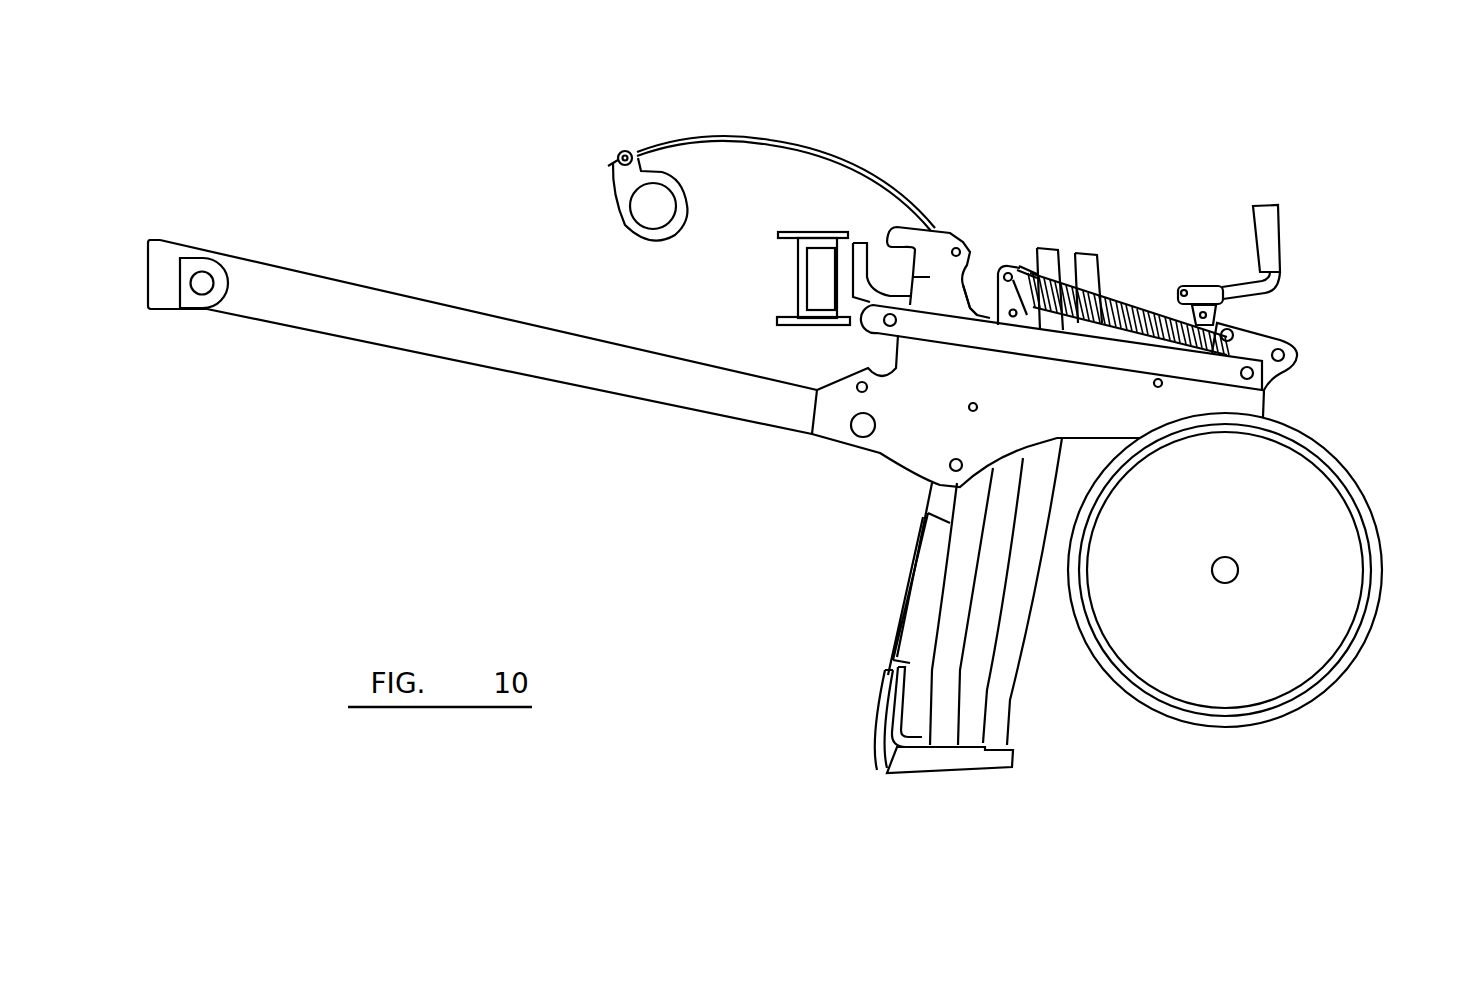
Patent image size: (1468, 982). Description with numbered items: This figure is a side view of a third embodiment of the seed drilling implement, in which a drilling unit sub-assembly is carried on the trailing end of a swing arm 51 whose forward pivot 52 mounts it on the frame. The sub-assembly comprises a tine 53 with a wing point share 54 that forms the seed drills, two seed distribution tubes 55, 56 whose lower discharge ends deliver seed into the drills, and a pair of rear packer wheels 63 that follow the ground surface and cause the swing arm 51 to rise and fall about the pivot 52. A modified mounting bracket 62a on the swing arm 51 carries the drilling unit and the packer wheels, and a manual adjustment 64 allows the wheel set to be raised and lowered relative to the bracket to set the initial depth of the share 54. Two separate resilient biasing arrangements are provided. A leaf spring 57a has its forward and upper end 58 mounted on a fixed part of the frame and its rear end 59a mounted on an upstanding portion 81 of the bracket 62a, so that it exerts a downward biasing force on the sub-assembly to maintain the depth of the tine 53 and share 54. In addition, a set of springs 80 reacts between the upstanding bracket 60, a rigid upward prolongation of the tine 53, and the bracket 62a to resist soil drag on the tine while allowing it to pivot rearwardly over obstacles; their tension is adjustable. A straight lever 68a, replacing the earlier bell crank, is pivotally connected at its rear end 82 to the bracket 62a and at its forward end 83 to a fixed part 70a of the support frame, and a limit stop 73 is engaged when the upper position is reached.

The swing arm 51 is at (449, 328).
The forward pivot 52 is at (203, 280).
The tine 53 is at (922, 593).
The wing point share 54 is at (948, 763).
The seed distribution tube 55 is at (997, 645).
The seed distribution tube 56 is at (965, 653).
The leaf spring 57a is at (880, 180).
The forward and upper end of leaf spring 58 is at (618, 152).
The rear end of leaf spring 59a is at (955, 327).
The upstanding bracket 60 is at (1003, 297).
The modified mounting bracket 62a is at (960, 432).
The rear packer wheels 63 is at (1315, 643).
The manual adjustment 64 is at (1205, 285).
The straight lever 68a is at (960, 322).
The fixed part of the support frame 70a is at (805, 230).
The limit stop 73 is at (861, 428).
The springs 80 is at (1127, 280).
The upstanding portion 81 is at (917, 277).
The rear end of lever 82 is at (1257, 353).
The forward end of lever 83 is at (885, 324).